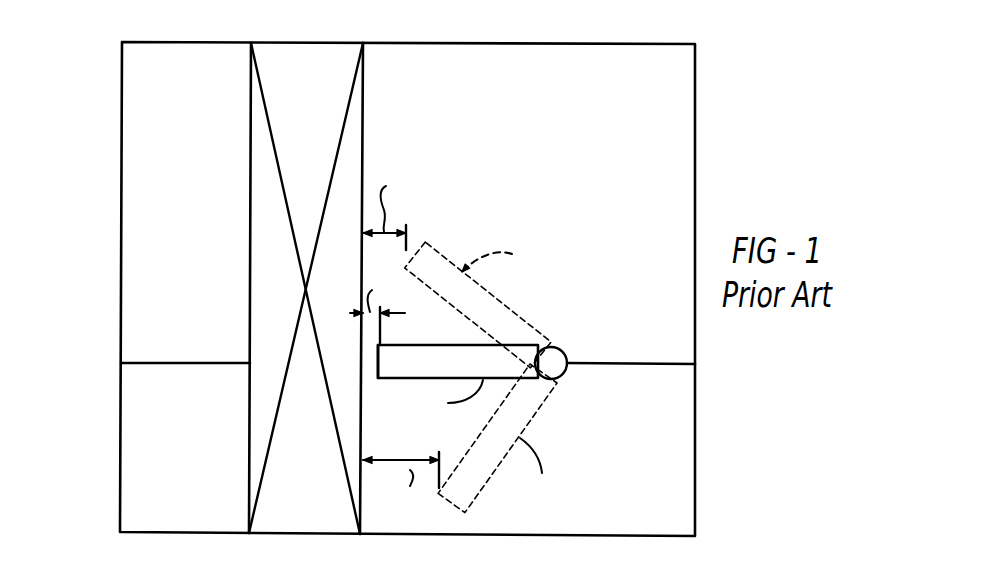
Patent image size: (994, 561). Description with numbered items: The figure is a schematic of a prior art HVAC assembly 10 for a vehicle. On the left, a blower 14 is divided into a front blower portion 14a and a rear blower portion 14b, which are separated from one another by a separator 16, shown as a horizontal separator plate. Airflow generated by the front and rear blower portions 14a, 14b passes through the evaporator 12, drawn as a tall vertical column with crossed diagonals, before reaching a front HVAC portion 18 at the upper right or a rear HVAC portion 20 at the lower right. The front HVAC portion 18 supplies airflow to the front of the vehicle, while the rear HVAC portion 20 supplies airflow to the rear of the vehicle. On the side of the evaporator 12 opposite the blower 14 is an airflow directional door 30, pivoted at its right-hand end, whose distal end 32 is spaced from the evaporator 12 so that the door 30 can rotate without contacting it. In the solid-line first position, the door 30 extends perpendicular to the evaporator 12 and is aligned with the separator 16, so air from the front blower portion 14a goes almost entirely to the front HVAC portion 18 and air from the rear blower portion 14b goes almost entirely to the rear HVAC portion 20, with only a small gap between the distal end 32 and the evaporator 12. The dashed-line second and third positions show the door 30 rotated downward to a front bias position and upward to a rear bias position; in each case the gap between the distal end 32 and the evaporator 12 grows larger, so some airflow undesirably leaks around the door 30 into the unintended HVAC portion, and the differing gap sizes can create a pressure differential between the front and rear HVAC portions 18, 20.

The HVAC assembly 10 is at (726, 80).
The evaporator 12 is at (363, 133).
The blower 14 is at (103, 300).
The front blower portion 14a is at (153, 100).
The rear blower portion 14b is at (137, 465).
The separator 16 is at (160, 364).
The front HVAC portion 18 is at (678, 165).
The rear HVAC portion 20 is at (683, 432).
The airflow directional door 30 is at (533, 300).
The distal end 32 is at (378, 365).